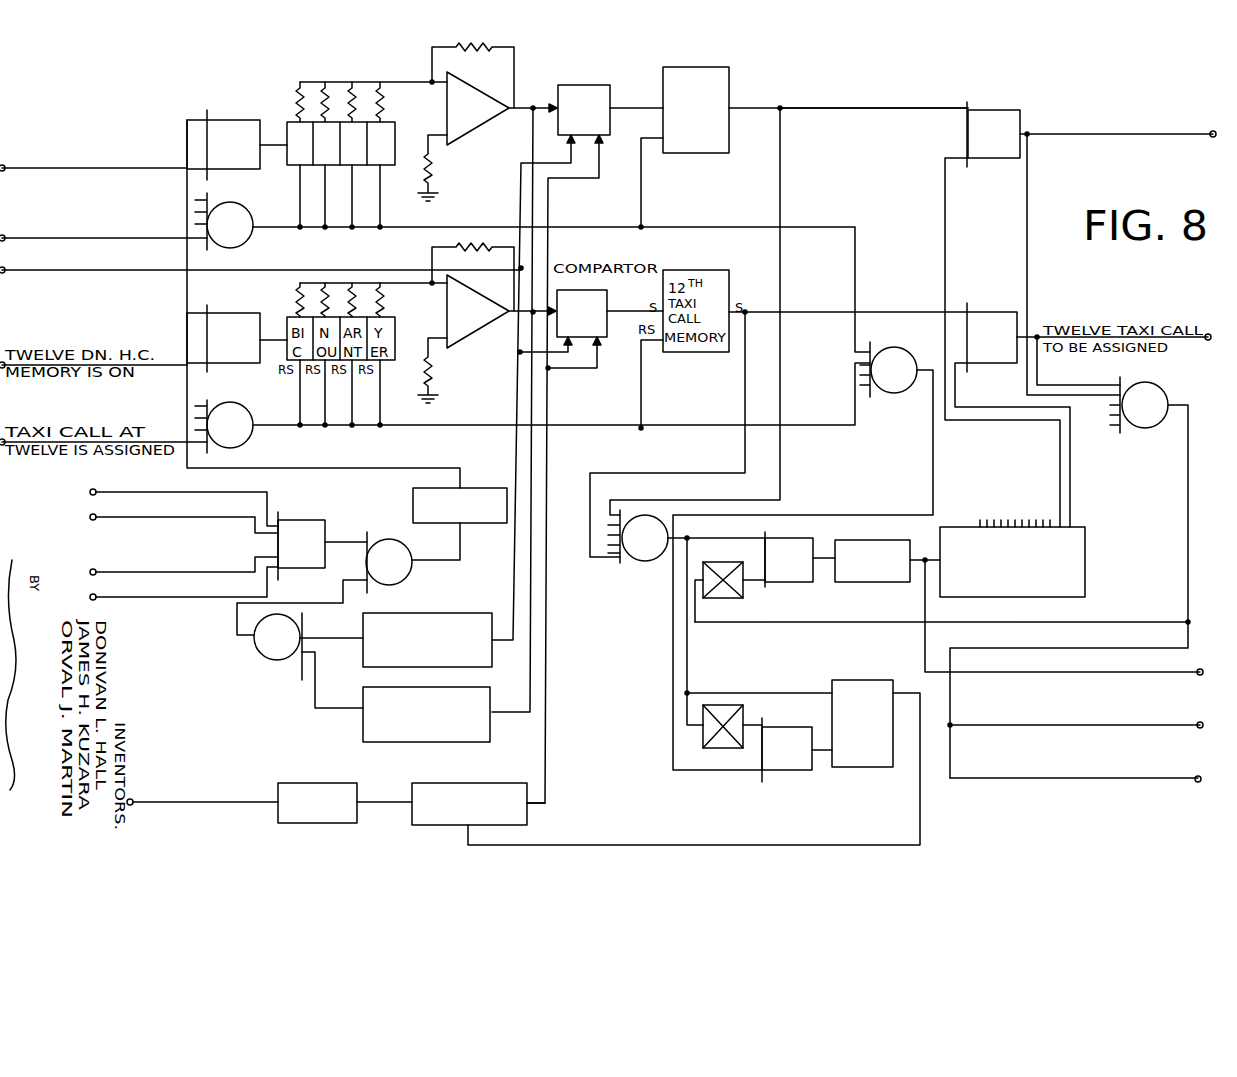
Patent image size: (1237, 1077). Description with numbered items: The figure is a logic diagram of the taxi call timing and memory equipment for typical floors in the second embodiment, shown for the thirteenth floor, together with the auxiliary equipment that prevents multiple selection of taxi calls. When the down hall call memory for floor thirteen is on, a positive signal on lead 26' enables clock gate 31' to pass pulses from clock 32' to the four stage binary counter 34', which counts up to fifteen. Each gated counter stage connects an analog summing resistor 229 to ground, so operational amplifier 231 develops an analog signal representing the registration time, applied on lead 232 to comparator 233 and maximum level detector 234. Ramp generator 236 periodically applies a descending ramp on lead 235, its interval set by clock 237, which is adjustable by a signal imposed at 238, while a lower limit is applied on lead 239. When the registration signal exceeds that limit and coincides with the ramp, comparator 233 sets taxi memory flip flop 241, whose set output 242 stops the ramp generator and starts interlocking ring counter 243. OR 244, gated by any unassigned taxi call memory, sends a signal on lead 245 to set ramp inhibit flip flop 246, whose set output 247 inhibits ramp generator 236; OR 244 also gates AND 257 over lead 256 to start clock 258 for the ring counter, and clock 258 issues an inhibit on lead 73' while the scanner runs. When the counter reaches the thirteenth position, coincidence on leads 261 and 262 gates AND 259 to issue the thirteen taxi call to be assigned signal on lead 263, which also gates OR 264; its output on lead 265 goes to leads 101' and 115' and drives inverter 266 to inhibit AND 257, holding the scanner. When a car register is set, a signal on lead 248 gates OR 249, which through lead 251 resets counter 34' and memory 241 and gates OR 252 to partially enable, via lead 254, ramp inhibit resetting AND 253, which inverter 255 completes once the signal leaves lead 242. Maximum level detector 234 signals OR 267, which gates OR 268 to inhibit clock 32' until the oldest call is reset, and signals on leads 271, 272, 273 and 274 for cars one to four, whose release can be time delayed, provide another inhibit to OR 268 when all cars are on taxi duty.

The lead 26' is at (94, 156).
The clock gate 31' is at (223, 145).
The analog summing resistor 229 is at (380, 93).
The binary counter 34' is at (353, 144).
The operational amplifier 231 is at (466, 122).
The lead 232 is at (532, 136).
The comparator 233 is at (596, 102).
The lead 235 is at (550, 183).
The lead 239 is at (573, 386).
The taxi memory flip flop 241 is at (679, 155).
The set output 242 is at (780, 150).
The lead 261 is at (804, 112).
The AND 259 is at (993, 134).
The lead 262 is at (944, 180).
The lead 263 is at (1203, 137).
The OR 249 is at (224, 221).
The lead 248 is at (64, 239).
The lead 251 is at (337, 229).
The OR 252 is at (888, 369).
The lead 254 is at (932, 418).
The OR 264 is at (1139, 405).
The clock 32' is at (459, 505).
The lead 271 is at (270, 500).
The lead 272 is at (272, 516).
The lead 273 is at (265, 553).
The lead 274 is at (272, 576).
The OR 268 is at (389, 562).
The OR 267 is at (302, 630).
The maximum level detector 234 is at (414, 742).
The OR 244 is at (638, 536).
The lead 256 is at (699, 541).
The AND 257 is at (800, 559).
The clock 258 is at (838, 546).
The interlocking ring counter 243 is at (1086, 548).
The inverter 266 is at (736, 598).
The lead 265 is at (806, 622).
The lead 245 is at (689, 630).
The ramp inhibit flip flop 246 is at (836, 680).
The lead 73' is at (1075, 625).
The lead 115' is at (1075, 718).
The lead 101' is at (1076, 774).
The inverter 255 is at (740, 723).
The ramp inhibit resetting AND 253 is at (797, 750).
The set output 247 is at (919, 780).
The adjustment signal input 238 is at (130, 799).
The clock 237 is at (305, 785).
The ramp generator 236 is at (452, 785).